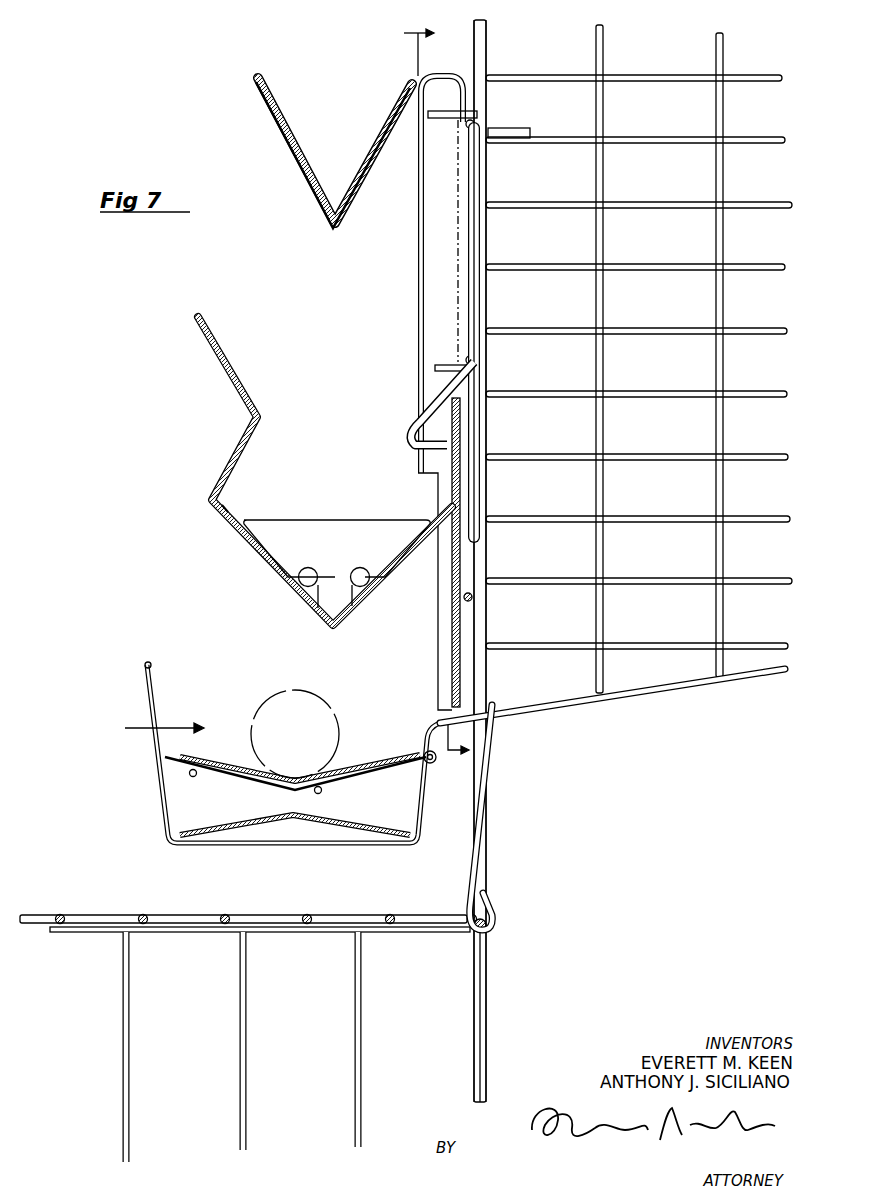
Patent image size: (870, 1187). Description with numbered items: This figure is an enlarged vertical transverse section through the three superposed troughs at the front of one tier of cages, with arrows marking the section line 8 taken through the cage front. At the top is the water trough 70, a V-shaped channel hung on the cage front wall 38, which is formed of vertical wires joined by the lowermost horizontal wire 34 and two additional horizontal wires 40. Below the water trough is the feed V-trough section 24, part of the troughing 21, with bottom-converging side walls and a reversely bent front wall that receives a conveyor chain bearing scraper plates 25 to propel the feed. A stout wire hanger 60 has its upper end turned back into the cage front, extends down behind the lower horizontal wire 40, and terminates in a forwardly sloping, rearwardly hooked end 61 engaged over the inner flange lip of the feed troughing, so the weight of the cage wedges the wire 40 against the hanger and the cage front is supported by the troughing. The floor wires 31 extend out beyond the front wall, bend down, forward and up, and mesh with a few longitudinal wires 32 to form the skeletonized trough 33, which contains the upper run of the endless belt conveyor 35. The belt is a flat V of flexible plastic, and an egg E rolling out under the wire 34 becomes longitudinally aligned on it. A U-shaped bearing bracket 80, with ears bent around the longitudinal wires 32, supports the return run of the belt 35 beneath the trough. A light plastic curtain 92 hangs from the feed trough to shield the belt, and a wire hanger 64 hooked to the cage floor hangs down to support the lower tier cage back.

The section line 8- 8 is at (434, 394).
The troughing 21 is at (244, 390).
The feed V-trough section 24 is at (228, 512).
The scraper plate 25 is at (318, 530).
The rear to front wire 31 is at (437, 713).
The longitudinal wire 32 is at (195, 777).
The skeletonized trough 33 is at (147, 729).
The lowermost horizontal wire 34 is at (463, 599).
The endless belt conveyor 35 is at (368, 758).
The front wall 38 is at (477, 58).
The horizontal wire 40 is at (465, 126).
The wire hanger 60 is at (478, 238).
The hooked end 61 is at (404, 433).
The wire hanger 64 is at (482, 812).
The water trough 70 is at (294, 140).
The bearing bracket 80 is at (165, 793).
The plastic curtain 92 is at (452, 636).
The egg E is at (304, 694).